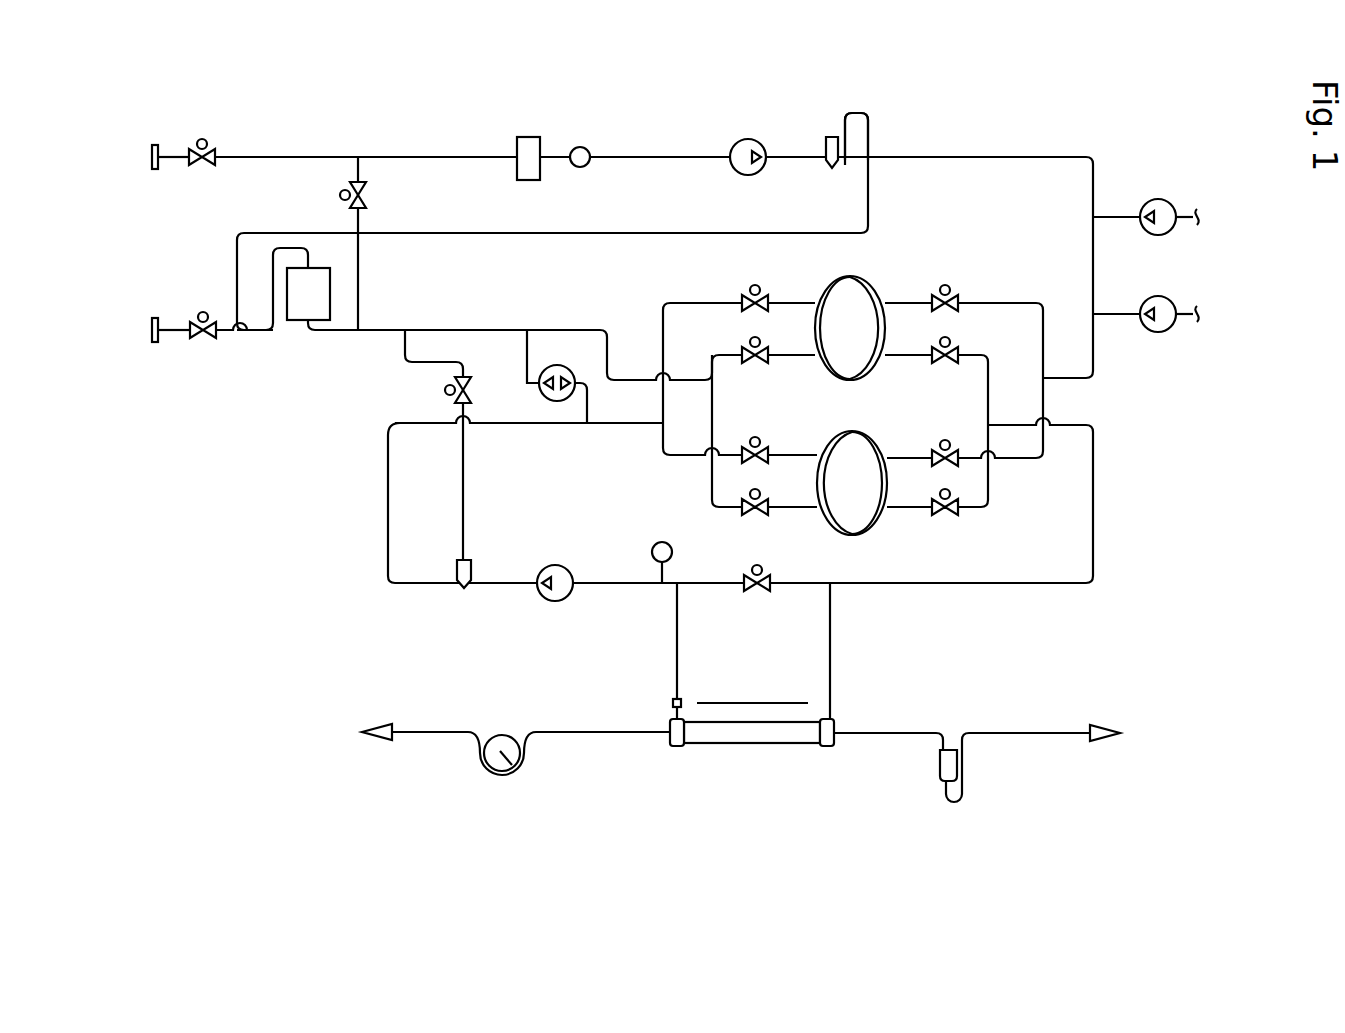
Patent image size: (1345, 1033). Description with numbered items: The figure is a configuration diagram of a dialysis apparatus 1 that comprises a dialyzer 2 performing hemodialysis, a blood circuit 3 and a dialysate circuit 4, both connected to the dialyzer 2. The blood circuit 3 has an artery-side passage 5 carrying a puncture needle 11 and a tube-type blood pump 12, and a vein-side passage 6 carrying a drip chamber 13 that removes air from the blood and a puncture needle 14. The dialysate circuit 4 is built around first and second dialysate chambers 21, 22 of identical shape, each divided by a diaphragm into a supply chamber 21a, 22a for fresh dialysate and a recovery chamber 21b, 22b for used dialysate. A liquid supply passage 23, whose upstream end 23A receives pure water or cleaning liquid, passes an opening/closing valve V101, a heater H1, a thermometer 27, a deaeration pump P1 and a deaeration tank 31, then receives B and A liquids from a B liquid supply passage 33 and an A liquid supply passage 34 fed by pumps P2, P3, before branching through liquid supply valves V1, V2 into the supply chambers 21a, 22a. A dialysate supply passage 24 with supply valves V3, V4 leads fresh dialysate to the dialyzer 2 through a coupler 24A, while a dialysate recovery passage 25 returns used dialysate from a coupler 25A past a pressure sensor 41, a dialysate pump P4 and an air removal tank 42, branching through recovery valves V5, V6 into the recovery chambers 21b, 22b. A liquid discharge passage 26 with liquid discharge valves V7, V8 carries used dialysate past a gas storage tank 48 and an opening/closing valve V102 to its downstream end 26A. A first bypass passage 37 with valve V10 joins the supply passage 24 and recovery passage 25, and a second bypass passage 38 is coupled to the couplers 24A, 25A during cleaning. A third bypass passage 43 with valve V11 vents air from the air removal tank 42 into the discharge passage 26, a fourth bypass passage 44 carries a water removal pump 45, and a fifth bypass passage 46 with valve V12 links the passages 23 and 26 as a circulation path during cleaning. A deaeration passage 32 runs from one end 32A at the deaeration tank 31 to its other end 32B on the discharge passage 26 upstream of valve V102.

The dialysis apparatus 1 is at (1008, 121).
The dialyzer 2 is at (750, 742).
The blood circuit 3 is at (620, 737).
The dialysate circuit 4 is at (1105, 455).
The artery-side passage 5 is at (440, 735).
The vein-side passage 6 is at (1032, 738).
The puncture needle 11 is at (375, 740).
The blood pump 12 is at (505, 758).
The drip chamber 13 is at (940, 760).
The puncture needle 14 is at (1112, 738).
The first dialysate chamber 21 is at (852, 288).
The supply chamber 21a is at (862, 292).
The recovery chamber 21b is at (820, 318).
The second dialysate chamber 22 is at (852, 440).
The supply chamber 22a is at (882, 445).
The recovery chamber 22b is at (834, 455).
The liquid supply passage 23 is at (928, 155).
The upstream end 23A is at (155, 145).
The dialysate supply passage 24 is at (1100, 535).
The coupler 24A is at (840, 714).
The dialysate recovery passage 25 is at (388, 548).
The coupler 25A is at (672, 716).
The liquid discharge passage 26 is at (470, 328).
The downstream end 26A is at (152, 326).
The thermometer 27 is at (580, 146).
The deaeration tank 31 is at (828, 138).
The deaeration passage 32 is at (222, 248).
The one end of deaeration passage 32A is at (842, 125).
The other end of deaeration passage 32B is at (252, 335).
The B liquid supply passage 33 is at (1127, 215).
The A liquid supply passage 34 is at (1125, 312).
The first bypass passage 37 is at (722, 585).
The second bypass passage 38 is at (725, 703).
The pressure sensor 41 is at (662, 540).
The air removal tank 42 is at (470, 570).
The third bypass passage 43 is at (463, 507).
The fourth bypass passage 44 is at (590, 405).
The water removal pump 45 is at (560, 400).
The fifth bypass passage 46 is at (360, 272).
The gas storage tank 48 is at (302, 326).
The heater H1 is at (528, 140).
The deaeration pump P1 is at (745, 142).
The pump P2 is at (1165, 205).
The pump P3 is at (1165, 302).
The dialysate pump P4 is at (560, 565).
The liquid supply valve V1 is at (948, 285).
The liquid supply valve V2 is at (948, 445).
The supply valve V3 is at (948, 342).
The supply valve V4 is at (950, 518).
The recovery valve V5 is at (752, 290).
The recovery valve V6 is at (760, 448).
The liquid discharge valve V7 is at (752, 342).
The liquid discharge valve V8 is at (762, 503).
The opening/closing valve V10 is at (762, 570).
The opening/closing valve V11 is at (450, 390).
The opening/closing valve V12 is at (352, 196).
The opening/closing valve V101 is at (208, 142).
The opening/closing valve V102 is at (205, 318).